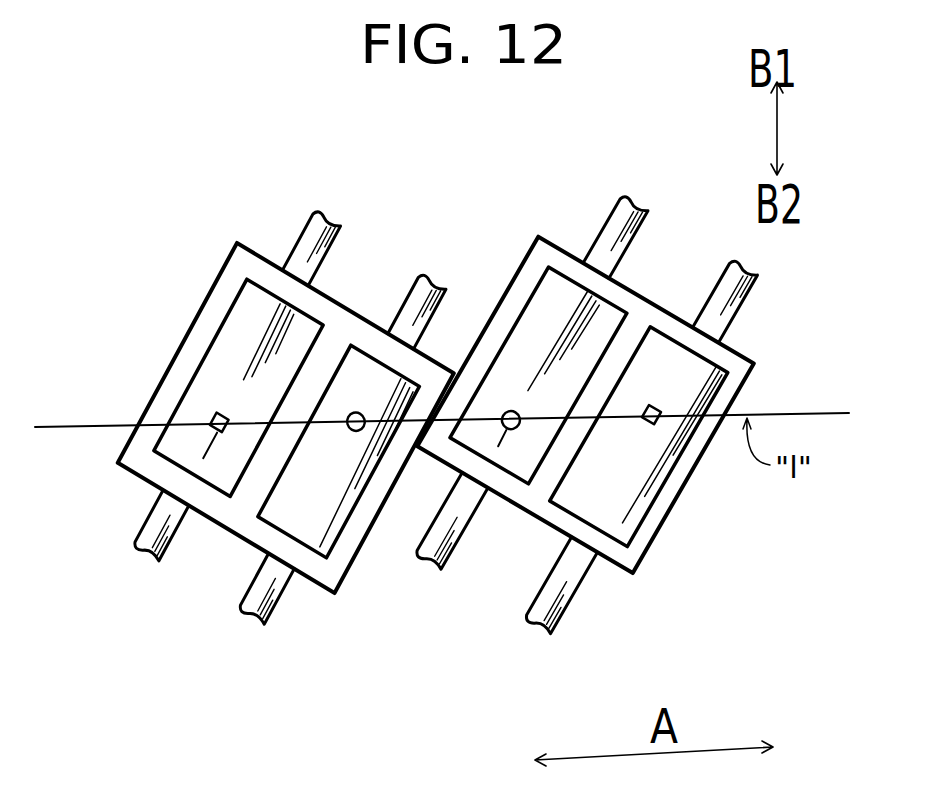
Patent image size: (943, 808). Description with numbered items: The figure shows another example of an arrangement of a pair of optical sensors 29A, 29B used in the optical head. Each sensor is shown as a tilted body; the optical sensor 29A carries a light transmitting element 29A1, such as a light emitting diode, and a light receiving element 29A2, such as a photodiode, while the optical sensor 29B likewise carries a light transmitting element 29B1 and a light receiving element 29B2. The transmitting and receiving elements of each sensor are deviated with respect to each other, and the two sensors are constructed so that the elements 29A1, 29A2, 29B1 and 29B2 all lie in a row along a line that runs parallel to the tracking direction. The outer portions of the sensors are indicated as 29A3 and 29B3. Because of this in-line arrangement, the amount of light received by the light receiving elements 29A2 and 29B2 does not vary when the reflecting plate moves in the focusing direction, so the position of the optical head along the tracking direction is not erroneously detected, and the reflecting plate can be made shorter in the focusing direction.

The optical sensor 29A is at (604, 598).
The light transmitting element 29A1 is at (508, 411).
The light receiving element 29A2 is at (660, 408).
The body of first component 29A3 is at (655, 517).
The optical sensor 29B is at (216, 563).
The light transmitting element 29B1 is at (358, 412).
The light receiving element 29B2 is at (212, 415).
The body of second component 29B3 is at (148, 470).